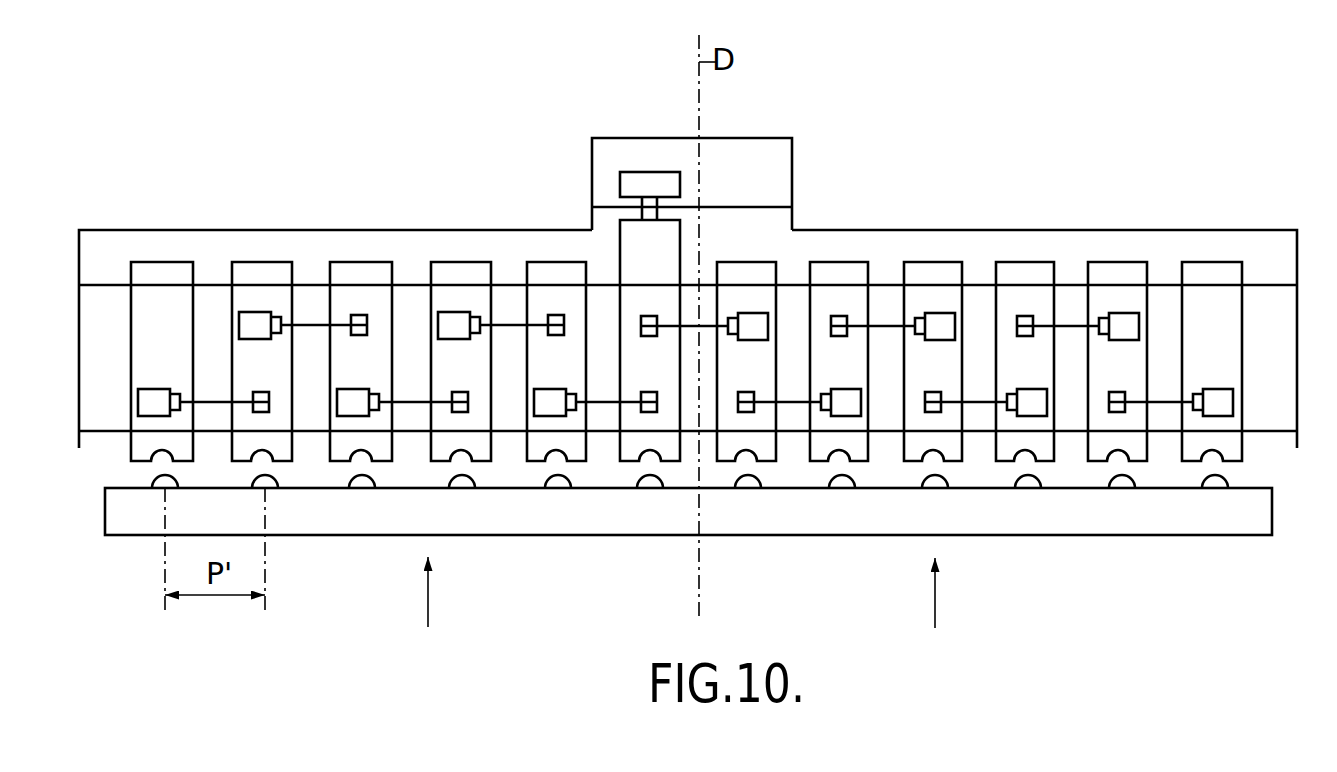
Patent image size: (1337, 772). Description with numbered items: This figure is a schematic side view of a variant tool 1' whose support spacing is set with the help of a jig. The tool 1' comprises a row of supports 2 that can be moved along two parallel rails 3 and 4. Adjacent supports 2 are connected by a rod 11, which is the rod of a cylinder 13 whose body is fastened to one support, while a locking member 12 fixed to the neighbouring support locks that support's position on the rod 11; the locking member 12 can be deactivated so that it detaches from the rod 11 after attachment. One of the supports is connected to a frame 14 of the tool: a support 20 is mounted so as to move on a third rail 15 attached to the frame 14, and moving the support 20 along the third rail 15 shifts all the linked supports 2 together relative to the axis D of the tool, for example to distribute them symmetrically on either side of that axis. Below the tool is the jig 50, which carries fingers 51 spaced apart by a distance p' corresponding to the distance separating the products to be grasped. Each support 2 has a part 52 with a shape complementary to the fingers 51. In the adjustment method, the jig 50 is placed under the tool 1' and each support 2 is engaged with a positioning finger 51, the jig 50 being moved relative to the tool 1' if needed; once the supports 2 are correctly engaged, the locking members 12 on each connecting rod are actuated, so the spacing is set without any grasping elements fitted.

The tool 1' is at (883, 112).
The supports 2 is at (172, 257).
The rail 3 is at (1262, 285).
The rail 4 is at (1268, 433).
The rod 11 is at (878, 327).
The locking member 12 is at (555, 317).
The cylinder 13 is at (450, 312).
The frame 14 is at (795, 135).
The third rail 15 is at (760, 205).
The support 20 is at (642, 187).
The jig 50 is at (1037, 512).
The fingers 51 is at (557, 480).
The part 52 is at (933, 453).